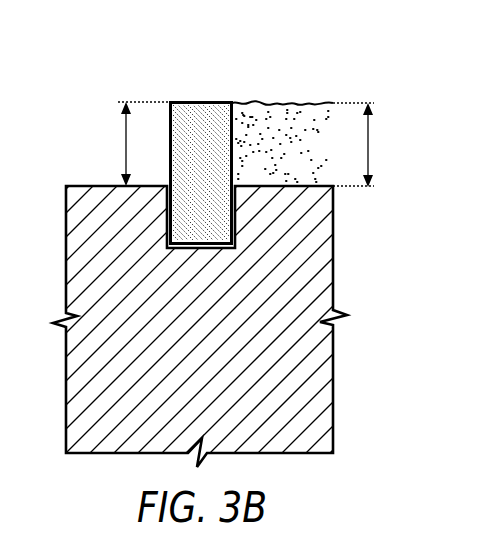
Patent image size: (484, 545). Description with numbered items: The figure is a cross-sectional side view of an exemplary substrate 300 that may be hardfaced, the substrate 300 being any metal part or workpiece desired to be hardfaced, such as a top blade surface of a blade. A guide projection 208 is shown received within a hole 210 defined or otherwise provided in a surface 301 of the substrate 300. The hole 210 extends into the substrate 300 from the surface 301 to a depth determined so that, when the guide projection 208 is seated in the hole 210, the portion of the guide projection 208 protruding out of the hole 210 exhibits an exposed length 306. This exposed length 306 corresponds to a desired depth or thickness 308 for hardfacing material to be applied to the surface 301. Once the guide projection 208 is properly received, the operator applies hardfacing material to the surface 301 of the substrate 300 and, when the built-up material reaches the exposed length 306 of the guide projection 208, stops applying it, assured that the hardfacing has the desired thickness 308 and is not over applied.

The guide projection 208 is at (169, 121).
The hole 210 is at (167, 197).
The substrate 300 is at (214, 337).
The surface 301 is at (334, 188).
The exposed length 306 is at (126, 146).
The thickness 308 is at (368, 146).